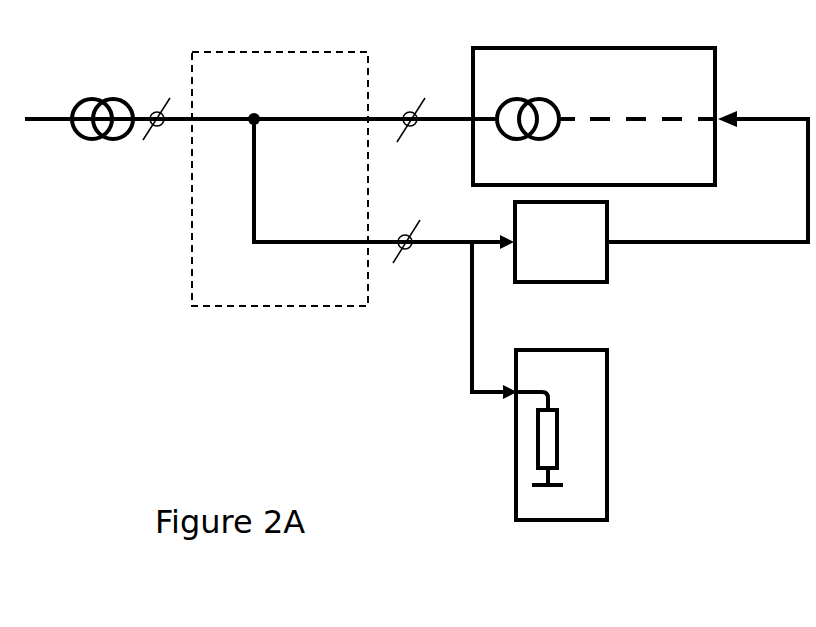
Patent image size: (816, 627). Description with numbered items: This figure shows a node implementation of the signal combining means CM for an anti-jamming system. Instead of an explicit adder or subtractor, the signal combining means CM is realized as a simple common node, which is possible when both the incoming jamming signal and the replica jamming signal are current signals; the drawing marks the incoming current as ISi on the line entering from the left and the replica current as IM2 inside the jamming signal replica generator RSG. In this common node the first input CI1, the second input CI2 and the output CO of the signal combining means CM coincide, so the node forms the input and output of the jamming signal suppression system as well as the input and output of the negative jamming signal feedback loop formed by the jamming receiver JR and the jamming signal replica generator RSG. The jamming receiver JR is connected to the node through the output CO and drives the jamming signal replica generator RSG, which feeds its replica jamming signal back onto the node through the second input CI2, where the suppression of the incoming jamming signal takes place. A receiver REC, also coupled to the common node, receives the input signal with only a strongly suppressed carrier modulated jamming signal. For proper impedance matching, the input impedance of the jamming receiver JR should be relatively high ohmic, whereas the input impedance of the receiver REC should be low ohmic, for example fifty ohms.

The primary current source I_Si (transformer / current measurement) ISi is at (108, 89).
The first input CI1 is at (156, 104).
The signal combining means CM is at (280, 162).
The second input CI2 is at (402, 105).
The output CO is at (405, 227).
The jamming signal replica generator RSG is at (594, 98).
The measurement current I_M2 source in RSG IM2 is at (538, 88).
The jamming receiver JR is at (580, 250).
The receiver REC is at (601, 435).